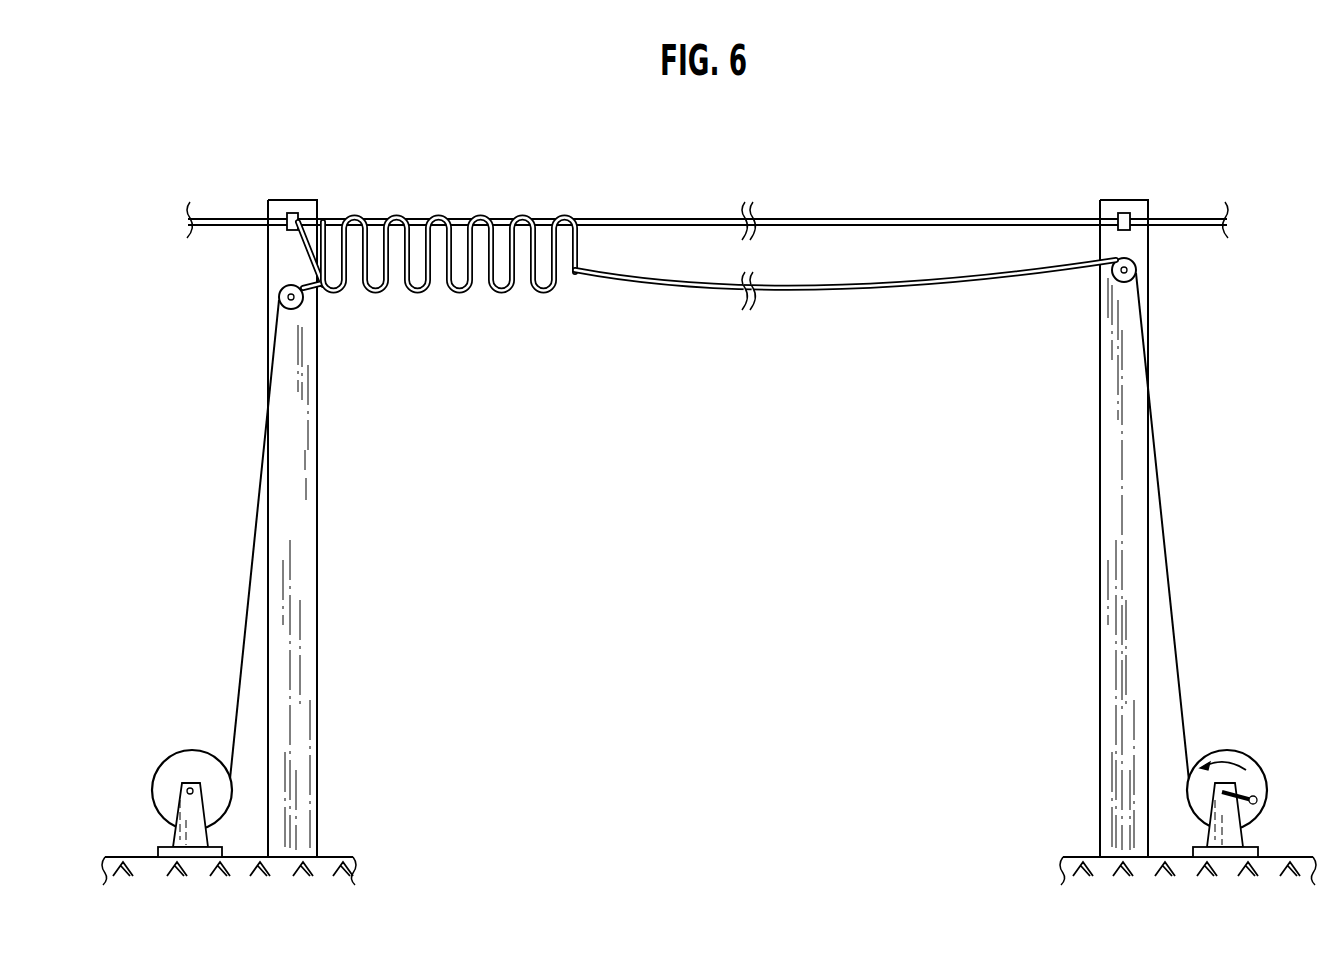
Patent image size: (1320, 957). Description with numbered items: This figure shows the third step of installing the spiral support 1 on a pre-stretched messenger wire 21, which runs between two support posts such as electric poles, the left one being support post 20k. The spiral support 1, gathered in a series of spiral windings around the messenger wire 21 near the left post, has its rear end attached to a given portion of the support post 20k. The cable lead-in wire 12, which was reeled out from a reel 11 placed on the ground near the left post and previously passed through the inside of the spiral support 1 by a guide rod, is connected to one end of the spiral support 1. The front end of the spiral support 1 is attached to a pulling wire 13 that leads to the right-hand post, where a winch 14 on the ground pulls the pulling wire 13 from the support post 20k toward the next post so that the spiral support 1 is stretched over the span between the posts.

The spiral support 1 is at (487, 191).
The reel 11 is at (188, 754).
The cable lead-in wire 12 is at (496, 294).
The pulling wire 13 is at (882, 292).
The winch 14 is at (1223, 754).
The support post 20k is at (289, 200).
The messenger wire 21 is at (877, 218).